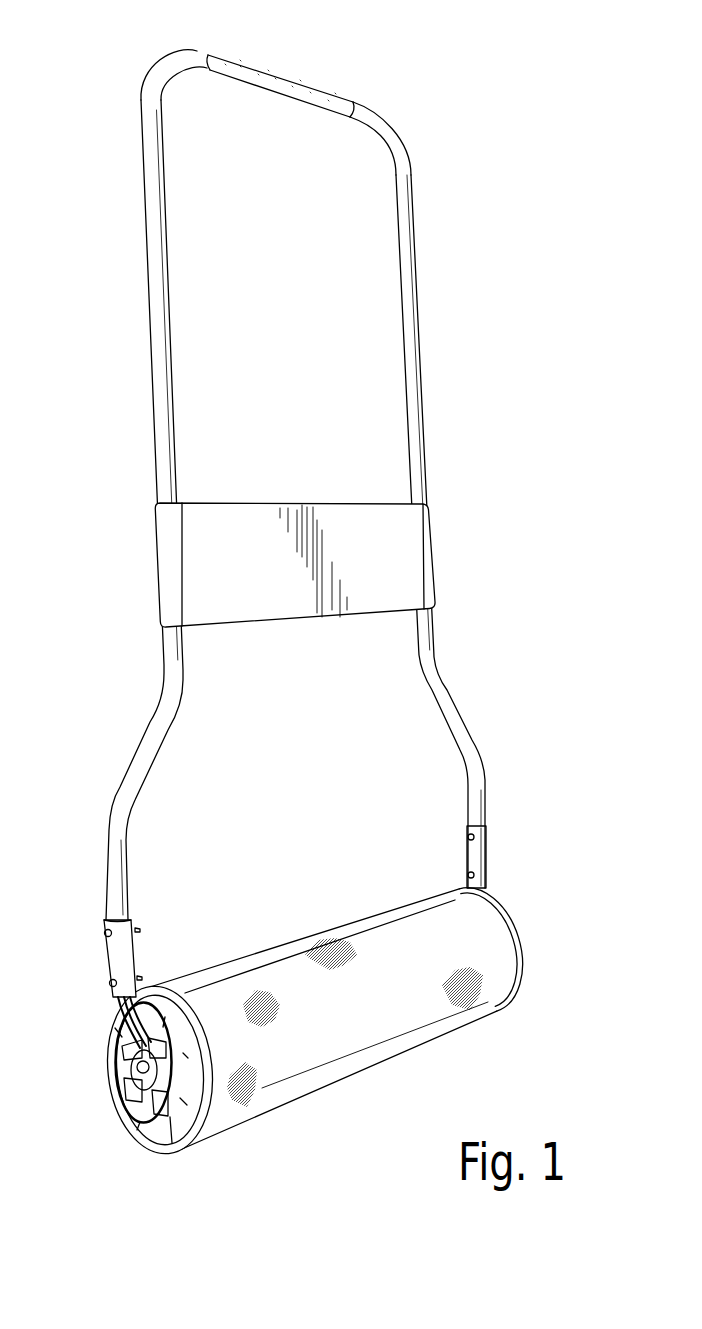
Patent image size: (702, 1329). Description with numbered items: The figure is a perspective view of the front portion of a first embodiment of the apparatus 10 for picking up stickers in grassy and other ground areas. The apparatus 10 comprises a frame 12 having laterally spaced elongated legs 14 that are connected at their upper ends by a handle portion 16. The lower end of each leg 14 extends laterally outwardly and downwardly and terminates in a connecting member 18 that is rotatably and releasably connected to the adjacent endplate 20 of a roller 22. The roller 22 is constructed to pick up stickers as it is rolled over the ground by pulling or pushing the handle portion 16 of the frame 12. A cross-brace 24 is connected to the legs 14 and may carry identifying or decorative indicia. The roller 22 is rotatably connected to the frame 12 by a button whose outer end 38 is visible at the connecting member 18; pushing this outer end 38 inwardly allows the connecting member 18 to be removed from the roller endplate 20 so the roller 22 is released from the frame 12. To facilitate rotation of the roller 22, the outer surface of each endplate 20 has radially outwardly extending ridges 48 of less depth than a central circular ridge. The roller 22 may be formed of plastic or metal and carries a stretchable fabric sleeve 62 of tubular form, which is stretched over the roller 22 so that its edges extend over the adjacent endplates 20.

The apparatus 10 is at (508, 106).
The frame 12 is at (420, 235).
The legs 14 is at (155, 229).
The handle portion 16 is at (256, 68).
The connecting member 18 is at (113, 1009).
The endplate 20 is at (157, 1133).
The roller 22 is at (273, 940).
The cross-brace 24 is at (236, 519).
The outer end of the button 38 is at (127, 1062).
The radially outwardly extending ridges 48 is at (166, 1120).
The stretchable fabric sleeve 62 is at (356, 953).